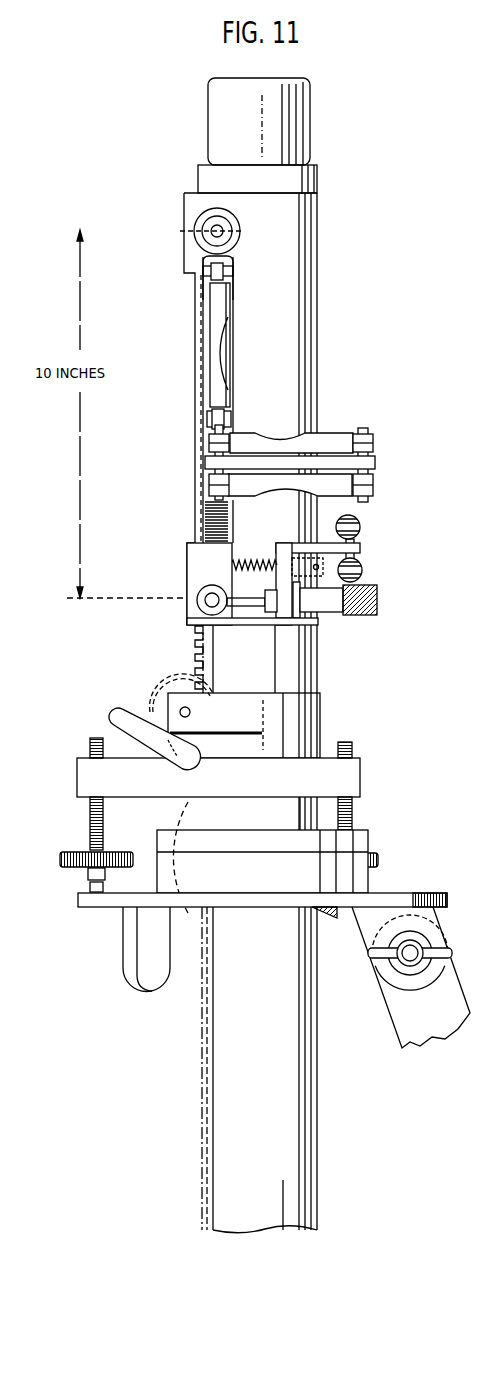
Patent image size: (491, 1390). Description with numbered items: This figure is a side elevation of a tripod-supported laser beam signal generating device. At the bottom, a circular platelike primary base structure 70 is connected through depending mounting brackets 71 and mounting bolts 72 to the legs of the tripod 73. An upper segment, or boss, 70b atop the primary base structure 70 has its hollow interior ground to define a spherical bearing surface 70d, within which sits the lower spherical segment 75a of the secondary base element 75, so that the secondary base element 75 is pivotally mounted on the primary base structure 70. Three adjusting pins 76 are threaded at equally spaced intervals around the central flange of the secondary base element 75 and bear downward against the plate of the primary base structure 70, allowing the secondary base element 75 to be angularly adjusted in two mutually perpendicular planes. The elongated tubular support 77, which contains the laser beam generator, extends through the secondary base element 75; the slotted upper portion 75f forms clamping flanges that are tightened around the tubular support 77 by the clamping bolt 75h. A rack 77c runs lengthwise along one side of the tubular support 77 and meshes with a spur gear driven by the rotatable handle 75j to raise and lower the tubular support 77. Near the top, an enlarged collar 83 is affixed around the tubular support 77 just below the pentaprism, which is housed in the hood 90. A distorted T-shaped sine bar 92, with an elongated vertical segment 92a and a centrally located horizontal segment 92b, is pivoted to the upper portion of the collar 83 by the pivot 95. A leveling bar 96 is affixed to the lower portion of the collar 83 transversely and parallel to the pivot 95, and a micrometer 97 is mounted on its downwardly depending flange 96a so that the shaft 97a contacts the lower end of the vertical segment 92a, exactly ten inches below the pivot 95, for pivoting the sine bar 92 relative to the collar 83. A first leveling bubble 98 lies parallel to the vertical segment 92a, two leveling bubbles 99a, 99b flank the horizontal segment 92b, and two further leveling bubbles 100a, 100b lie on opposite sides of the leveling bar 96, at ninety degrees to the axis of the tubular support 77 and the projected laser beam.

The hood 90 is at (215, 100).
The collar 83 is at (287, 322).
The pivot 95 is at (224, 231).
The first leveling bubble 98 is at (213, 307).
The sine bar 92 is at (193, 440).
The vertical segment 92a is at (194, 366).
The horizontal segment 92b is at (332, 462).
The leveling bubble 99a is at (328, 445).
The leveling bubble 99b is at (353, 490).
The leveling bar 96 is at (283, 545).
The downwardly depending flange 96a is at (287, 627).
The leveling bubble 100a is at (361, 529).
The leveling bubble 100b is at (362, 567).
The micrometer 97 is at (370, 614).
The micrometer shaft 97a is at (250, 611).
The tubular support 77 is at (300, 664).
The rack 77c is at (193, 648).
The secondary base element 75 is at (326, 756).
The lower spherical segment 75a is at (316, 816).
The upper portion 75f is at (300, 732).
The clamping bolt 75h is at (180, 708).
The rotatable handle 75j is at (111, 711).
The adjusting pins 76 is at (88, 814).
The primary base structure 70 is at (80, 900).
The upper segment 70b is at (160, 877).
The spherical bearing surface 70d is at (180, 822).
The mounting brackets 71 is at (137, 935).
The mounting bolts 72 is at (430, 950).
The tripod 73 is at (378, 990).